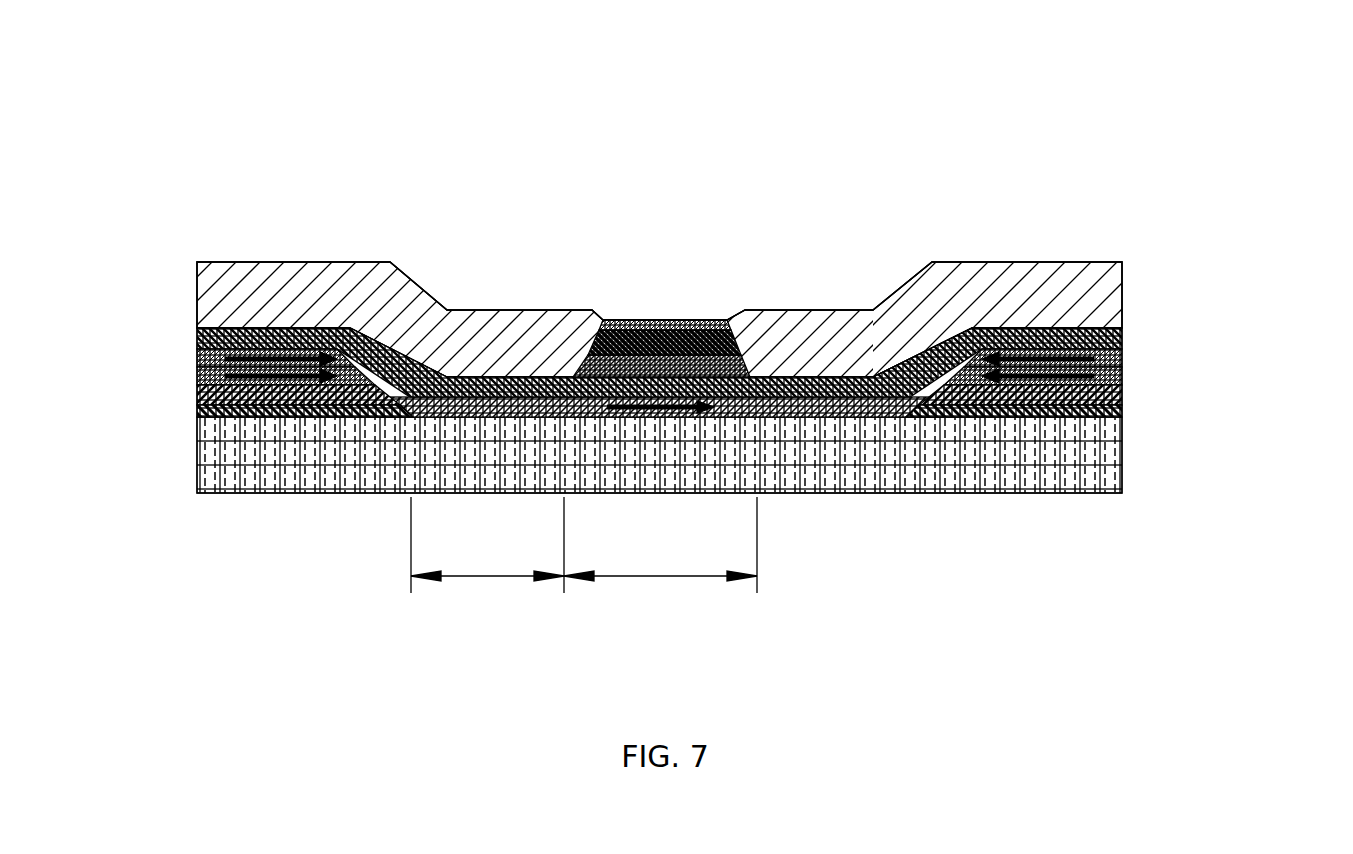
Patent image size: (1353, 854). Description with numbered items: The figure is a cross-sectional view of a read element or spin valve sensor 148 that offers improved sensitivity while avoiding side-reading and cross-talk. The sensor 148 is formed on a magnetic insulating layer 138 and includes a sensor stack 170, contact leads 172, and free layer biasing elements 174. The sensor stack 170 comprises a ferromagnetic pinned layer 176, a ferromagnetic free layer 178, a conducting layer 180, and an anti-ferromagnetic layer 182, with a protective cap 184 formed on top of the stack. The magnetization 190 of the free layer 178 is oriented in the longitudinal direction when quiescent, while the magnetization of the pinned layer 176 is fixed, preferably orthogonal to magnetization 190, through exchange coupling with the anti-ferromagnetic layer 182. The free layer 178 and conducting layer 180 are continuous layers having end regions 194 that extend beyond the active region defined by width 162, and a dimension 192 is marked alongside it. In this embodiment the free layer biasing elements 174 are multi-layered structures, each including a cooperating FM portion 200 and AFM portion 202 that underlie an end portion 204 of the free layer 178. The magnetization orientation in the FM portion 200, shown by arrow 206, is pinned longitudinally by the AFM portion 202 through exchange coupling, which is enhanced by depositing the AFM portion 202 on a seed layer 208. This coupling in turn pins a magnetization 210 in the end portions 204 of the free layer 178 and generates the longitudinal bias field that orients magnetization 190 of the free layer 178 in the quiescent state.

The magnetic insulating layer 138 is at (1029, 476).
The spin valve sensor 148 is at (838, 217).
The width 162 is at (653, 578).
The sensor stack 170 is at (713, 252).
The contact leads 172 is at (243, 270).
The free layer biasing elements 174 is at (686, 428).
The pinned layer 176 is at (733, 370).
The free layer 178 is at (830, 412).
The conducting layer 180 is at (975, 338).
The anti-ferromagnetic layer 182 is at (703, 343).
The protective cap 184 is at (630, 318).
The magnetization 190 is at (645, 410).
The overlap length 192 is at (480, 577).
The end regions 194 is at (410, 402).
The FM portion 200 is at (202, 378).
The AFM portion 202 is at (202, 400).
The end portion 204 is at (272, 318).
The arrow 206 is at (200, 369).
The seed layer 208 is at (293, 410).
The magnetization 210 is at (233, 350).